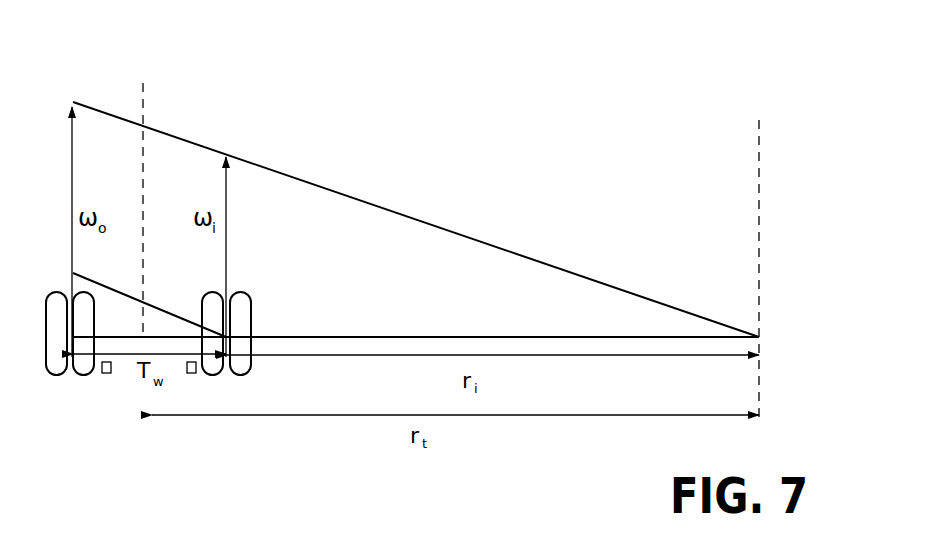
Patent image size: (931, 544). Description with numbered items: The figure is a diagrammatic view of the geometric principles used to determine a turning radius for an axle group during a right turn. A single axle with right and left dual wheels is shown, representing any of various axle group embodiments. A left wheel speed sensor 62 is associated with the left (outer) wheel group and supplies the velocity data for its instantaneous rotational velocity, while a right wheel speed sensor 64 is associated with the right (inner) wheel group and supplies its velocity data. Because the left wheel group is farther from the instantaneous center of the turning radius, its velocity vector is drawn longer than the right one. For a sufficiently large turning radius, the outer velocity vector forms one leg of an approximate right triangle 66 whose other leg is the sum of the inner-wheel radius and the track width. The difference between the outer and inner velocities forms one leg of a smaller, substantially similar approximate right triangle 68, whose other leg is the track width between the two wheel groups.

The left wheel speed sensor 62 is at (105, 373).
The right wheel speed sensor 64 is at (191, 373).
The approximate right triangle 66 is at (383, 207).
The approximate right triangle 68 is at (167, 313).